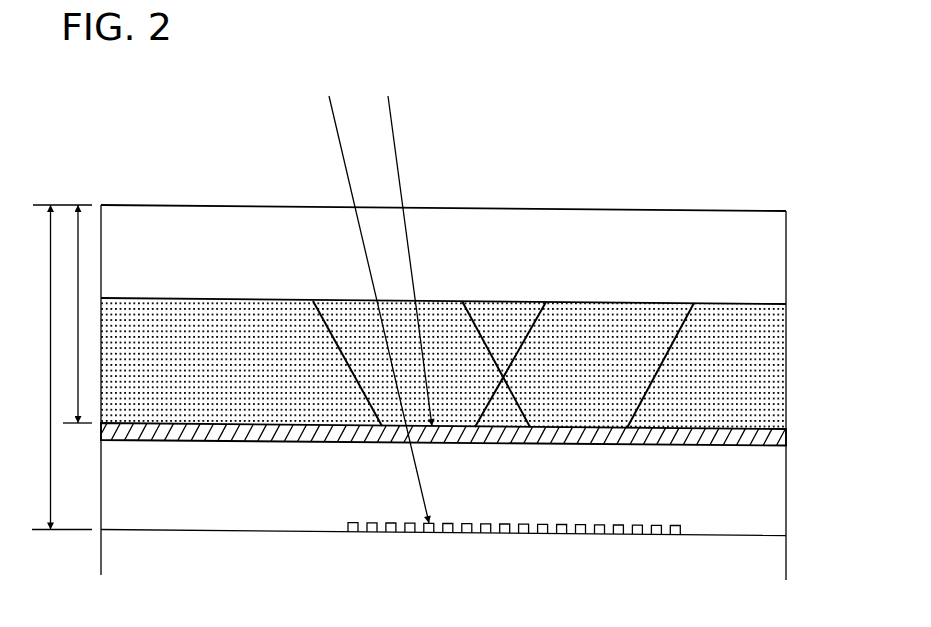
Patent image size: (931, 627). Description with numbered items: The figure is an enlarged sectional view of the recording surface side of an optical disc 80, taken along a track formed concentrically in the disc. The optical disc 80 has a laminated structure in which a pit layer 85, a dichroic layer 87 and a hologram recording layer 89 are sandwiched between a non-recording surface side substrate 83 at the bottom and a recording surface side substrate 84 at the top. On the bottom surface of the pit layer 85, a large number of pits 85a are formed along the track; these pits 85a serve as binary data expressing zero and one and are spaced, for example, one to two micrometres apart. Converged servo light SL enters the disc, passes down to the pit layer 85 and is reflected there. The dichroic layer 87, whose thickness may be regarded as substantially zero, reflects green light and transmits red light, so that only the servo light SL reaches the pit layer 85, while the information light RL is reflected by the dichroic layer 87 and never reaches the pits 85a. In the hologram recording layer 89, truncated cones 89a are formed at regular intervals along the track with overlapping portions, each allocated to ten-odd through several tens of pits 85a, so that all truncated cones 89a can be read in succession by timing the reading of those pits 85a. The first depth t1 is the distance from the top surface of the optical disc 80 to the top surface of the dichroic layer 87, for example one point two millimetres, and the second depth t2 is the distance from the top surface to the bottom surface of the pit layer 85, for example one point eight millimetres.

The optical disc 80 is at (823, 138).
The recording surface side substrate 84 is at (774, 263).
The hologram recording layer 89 is at (775, 374).
The truncated cones 89a is at (537, 317).
The dichroic layer 87 is at (783, 438).
The pit layer 85 is at (774, 487).
The pits 85a is at (371, 522).
The non-recording surface side substrate 83 is at (774, 555).
The servo light SL is at (340, 144).
The information light RL is at (394, 137).
The first depth t1 is at (76, 314).
The second depth t2 is at (57, 367).